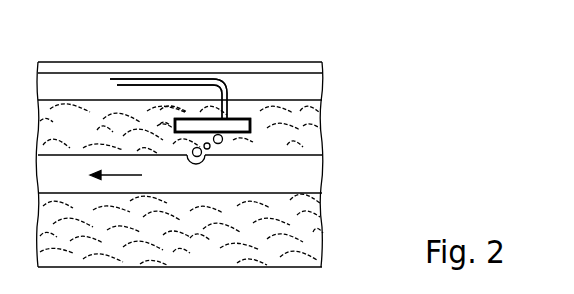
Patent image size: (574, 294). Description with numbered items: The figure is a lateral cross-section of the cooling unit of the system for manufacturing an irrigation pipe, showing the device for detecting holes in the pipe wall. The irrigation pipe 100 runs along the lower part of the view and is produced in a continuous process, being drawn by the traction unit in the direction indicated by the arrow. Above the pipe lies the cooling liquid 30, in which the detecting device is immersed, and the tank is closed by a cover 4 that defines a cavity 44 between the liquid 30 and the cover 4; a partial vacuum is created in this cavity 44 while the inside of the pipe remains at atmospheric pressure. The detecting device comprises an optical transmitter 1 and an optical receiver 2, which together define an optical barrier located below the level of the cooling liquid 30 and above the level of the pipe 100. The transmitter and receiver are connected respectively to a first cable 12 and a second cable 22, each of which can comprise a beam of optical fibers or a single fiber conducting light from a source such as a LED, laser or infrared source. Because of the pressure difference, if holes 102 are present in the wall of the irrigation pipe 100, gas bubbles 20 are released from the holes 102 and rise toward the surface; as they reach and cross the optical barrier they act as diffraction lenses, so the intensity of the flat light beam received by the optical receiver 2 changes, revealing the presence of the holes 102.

The optical transmitter 1 is at (252, 125).
The optical receiver 2 is at (252, 125).
The cover 4 is at (295, 66).
The cavity 44 is at (308, 93).
The first cable 12 is at (224, 95).
The second cable 22 is at (224, 95).
The gas bubbles 20 is at (202, 150).
The cooling liquid 30 is at (93, 138).
The irrigation pipe 100 is at (306, 184).
The holes 102 is at (207, 165).